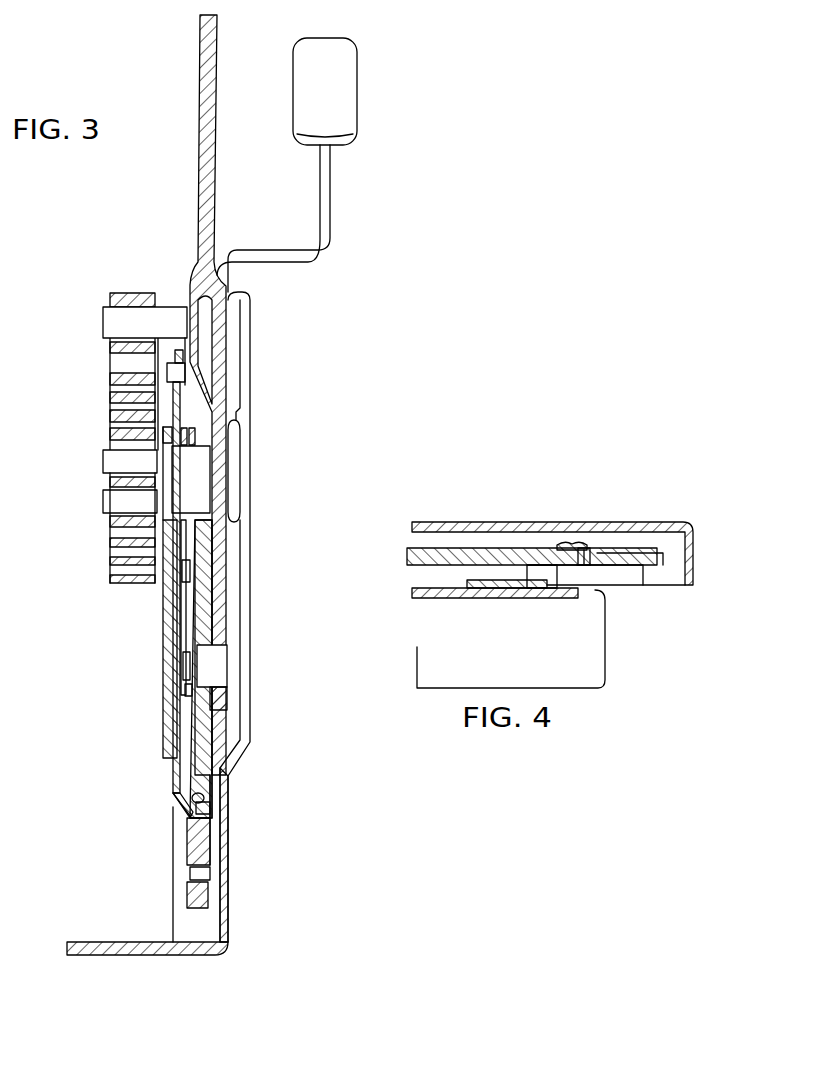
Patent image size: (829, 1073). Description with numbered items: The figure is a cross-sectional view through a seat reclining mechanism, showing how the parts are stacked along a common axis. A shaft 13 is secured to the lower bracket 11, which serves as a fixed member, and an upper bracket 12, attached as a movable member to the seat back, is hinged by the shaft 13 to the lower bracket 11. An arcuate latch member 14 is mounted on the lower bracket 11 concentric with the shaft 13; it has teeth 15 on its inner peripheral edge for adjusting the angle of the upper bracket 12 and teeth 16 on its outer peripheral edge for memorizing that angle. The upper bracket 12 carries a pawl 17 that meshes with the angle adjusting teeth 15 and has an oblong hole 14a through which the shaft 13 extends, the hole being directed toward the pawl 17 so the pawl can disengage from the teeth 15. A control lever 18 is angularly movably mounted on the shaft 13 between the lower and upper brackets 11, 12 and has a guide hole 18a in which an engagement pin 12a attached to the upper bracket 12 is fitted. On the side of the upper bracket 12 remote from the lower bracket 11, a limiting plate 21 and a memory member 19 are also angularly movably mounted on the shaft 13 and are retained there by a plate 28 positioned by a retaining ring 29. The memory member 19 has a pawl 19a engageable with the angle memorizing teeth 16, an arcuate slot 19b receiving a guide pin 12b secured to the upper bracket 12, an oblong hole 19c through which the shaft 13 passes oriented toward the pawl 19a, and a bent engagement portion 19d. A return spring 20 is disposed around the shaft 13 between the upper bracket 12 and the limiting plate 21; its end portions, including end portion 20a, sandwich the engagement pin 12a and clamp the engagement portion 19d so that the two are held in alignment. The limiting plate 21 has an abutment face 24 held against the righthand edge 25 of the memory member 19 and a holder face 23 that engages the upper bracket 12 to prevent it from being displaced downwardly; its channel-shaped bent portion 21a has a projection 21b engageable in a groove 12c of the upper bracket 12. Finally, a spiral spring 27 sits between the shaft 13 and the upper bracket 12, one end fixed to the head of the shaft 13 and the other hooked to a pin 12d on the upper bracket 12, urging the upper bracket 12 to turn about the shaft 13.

In FIG. 3, the lower bracket 11 is at (246, 382).
In FIG. 4, the lower bracket 11 is at (597, 522).
In FIG. 3, the upper bracket 12 is at (196, 172).
In FIG. 4, the upper bracket 12 is at (441, 548).
In FIG. 3, the engagement pin 12a is at (216, 662).
In FIG. 3, the guide pin 12b is at (196, 376).
In FIG. 4, the groove 12c is at (557, 548).
In FIG. 3, the pin 12d is at (112, 324).
In FIG. 3, the shaft 13 is at (240, 474).
In FIG. 3, the latch member 14 is at (211, 840).
In FIG. 3, the oblong hole 14a is at (206, 522).
In FIG. 3, the teeth 15 is at (214, 820).
In FIG. 3, the teeth 16 is at (212, 874).
In FIG. 3, the pawl 17 is at (210, 806).
In FIG. 3, the control lever 18 is at (330, 218).
In FIG. 3, the guide hole 18a is at (216, 680).
In FIG. 3, the memory member 19 is at (170, 793).
In FIG. 4, the memory member 19 is at (497, 598).
In FIG. 3, the pawl 19a is at (210, 898).
In FIG. 3, the arcuate slot 19b is at (174, 372).
In FIG. 3, the oblong hole 19c is at (174, 502).
In FIG. 3, the bent engagement portion 19d is at (182, 632).
In FIG. 3, the return spring 20 is at (178, 600).
In FIG. 3, the end portion 20a is at (174, 692).
In FIG. 3, the limiting plate 21 is at (178, 570).
In FIG. 4, the limiting plate 21 is at (580, 568).
In FIG. 4, the bent portion 21a is at (590, 550).
In FIG. 4, the projection 21b is at (572, 545).
In FIG. 4, the holder face 23 is at (590, 566).
In FIG. 4, the abutment face 24 is at (545, 585).
In FIG. 4, the righthand edge 25 is at (545, 584).
In FIG. 3, the spiral spring 27 is at (118, 380).
In FIG. 3, the plate 28 is at (165, 730).
In FIG. 3, the retaining ring 29 is at (118, 537).